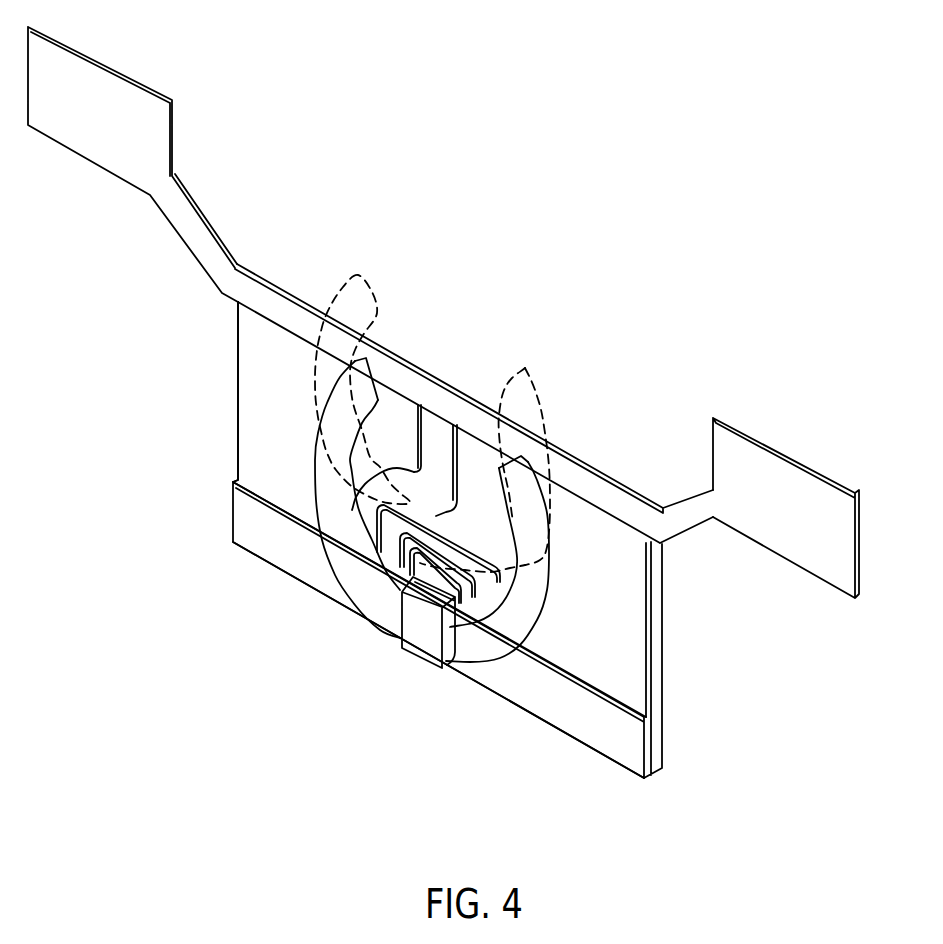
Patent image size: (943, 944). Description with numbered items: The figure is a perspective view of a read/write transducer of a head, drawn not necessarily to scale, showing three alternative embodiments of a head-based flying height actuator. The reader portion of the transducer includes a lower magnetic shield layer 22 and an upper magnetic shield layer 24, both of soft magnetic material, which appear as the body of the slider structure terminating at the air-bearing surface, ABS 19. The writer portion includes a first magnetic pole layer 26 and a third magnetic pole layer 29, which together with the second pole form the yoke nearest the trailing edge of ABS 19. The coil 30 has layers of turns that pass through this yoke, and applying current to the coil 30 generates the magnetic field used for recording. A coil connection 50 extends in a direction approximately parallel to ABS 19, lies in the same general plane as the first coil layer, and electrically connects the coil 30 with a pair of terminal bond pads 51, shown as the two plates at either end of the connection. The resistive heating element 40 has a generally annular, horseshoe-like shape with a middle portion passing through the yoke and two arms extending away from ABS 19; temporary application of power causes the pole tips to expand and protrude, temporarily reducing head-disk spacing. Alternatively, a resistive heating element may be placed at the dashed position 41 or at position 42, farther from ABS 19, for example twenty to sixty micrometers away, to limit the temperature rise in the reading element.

The terminal bond pads 51 is at (125, 72).
The coil connection 50 is at (426, 371).
The lower (S1) magnetic shield layer 22 is at (667, 627).
The upper (S2) magnetic shield layer 24 is at (611, 641).
The first magnetic pole layer 26 is at (522, 687).
The air-bearing surface (ABS) 19 is at (607, 757).
The resistive heating element 40 is at (325, 470).
The resistive heating element (alternative position) 41 is at (520, 393).
The resistive heating element (alternative position) 42 is at (485, 470).
The coil 30 is at (513, 588).
The third magnetic pole layer 29 is at (420, 633).